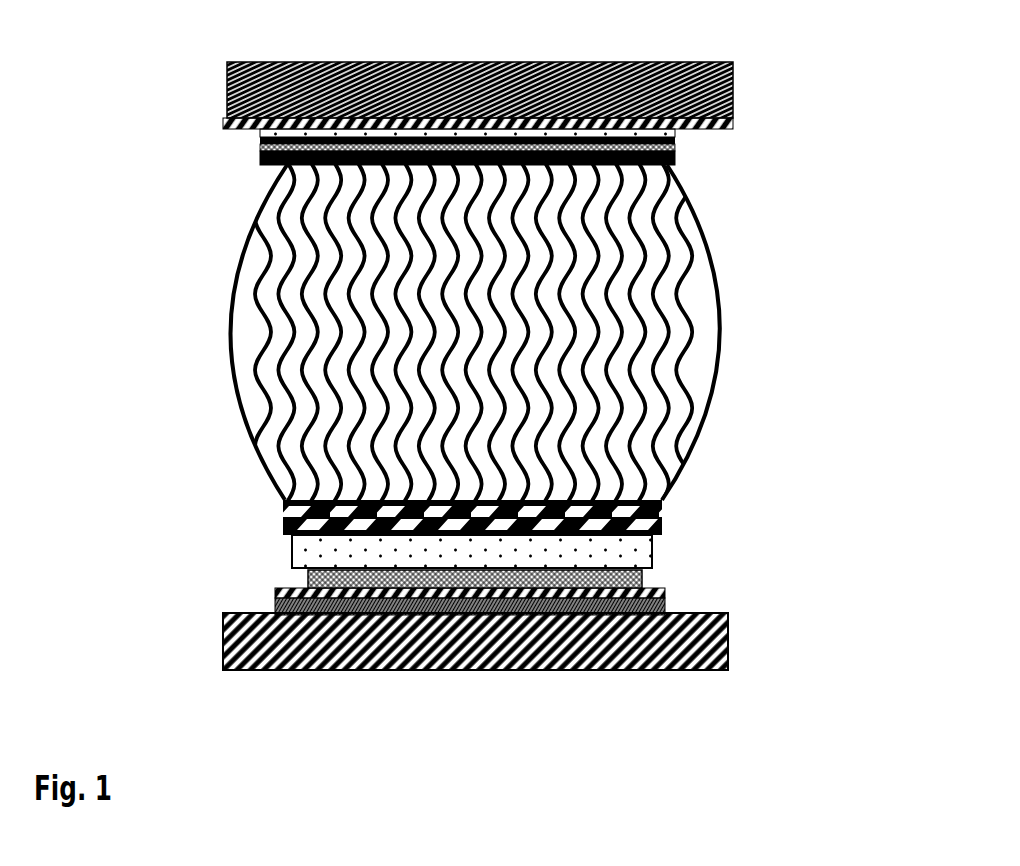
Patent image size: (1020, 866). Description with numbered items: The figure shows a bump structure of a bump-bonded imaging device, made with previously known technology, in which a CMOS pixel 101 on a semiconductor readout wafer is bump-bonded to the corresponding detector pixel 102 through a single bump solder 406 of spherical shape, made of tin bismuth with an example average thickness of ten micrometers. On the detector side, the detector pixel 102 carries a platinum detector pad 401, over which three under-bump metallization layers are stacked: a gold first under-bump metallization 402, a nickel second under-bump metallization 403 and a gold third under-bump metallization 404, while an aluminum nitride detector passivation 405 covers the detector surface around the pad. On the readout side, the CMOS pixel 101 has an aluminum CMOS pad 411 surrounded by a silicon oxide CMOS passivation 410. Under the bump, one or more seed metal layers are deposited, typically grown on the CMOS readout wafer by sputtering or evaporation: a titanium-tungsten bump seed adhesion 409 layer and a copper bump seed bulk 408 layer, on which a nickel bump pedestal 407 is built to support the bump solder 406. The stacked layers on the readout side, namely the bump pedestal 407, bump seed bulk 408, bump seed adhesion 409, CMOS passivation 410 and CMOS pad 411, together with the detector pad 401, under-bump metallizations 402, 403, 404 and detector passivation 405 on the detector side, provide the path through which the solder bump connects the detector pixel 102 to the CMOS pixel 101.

The CMOS pixel 101 is at (692, 690).
The detector pixel 102 is at (747, 73).
The detector pad 401 is at (770, 121).
The UBM 1 402 is at (770, 135).
The UBM 2 403 is at (770, 146).
The UBM 3 404 is at (770, 154).
The detector passivation 405 is at (715, 163).
The bump solder 406 is at (745, 360).
The bump pedestal 407 is at (700, 514).
The bump seed bulk 408 is at (695, 551).
The bump seed adhesion 409 is at (690, 567).
The CMOS passivation 410 is at (702, 587).
The CMOS pad 411 is at (700, 606).